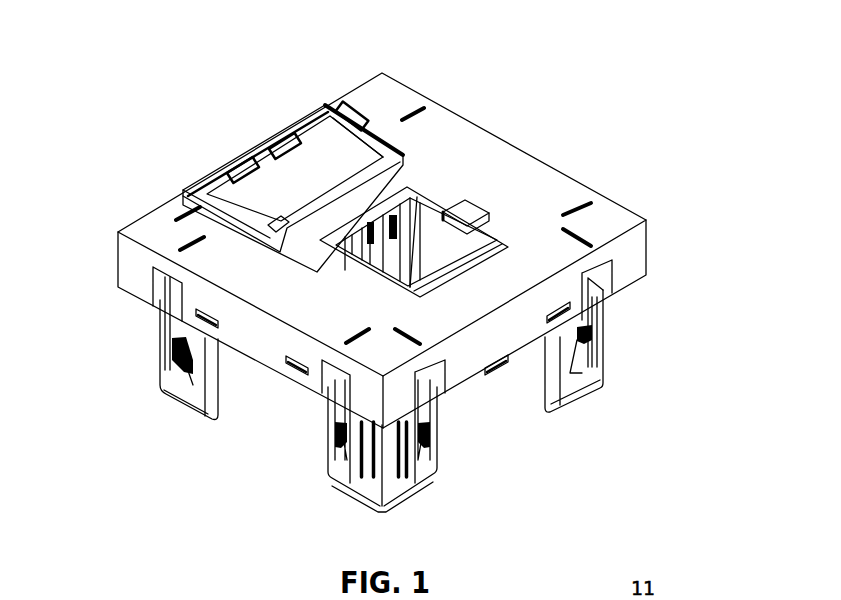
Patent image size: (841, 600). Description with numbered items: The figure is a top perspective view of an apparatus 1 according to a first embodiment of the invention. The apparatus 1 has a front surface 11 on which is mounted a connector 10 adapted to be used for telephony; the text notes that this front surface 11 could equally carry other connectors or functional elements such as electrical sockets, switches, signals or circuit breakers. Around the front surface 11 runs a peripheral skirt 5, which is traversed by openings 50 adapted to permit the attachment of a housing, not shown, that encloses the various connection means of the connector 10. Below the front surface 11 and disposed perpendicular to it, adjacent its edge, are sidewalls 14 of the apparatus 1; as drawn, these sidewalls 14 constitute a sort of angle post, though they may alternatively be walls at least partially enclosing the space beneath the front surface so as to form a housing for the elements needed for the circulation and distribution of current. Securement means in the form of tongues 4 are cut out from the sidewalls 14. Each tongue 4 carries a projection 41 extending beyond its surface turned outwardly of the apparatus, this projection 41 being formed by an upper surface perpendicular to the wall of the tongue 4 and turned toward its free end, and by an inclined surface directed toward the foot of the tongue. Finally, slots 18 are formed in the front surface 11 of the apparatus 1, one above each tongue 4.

The apparatus 1 is at (528, 146).
The tongue 4 is at (177, 323).
The peripheral skirt 5 is at (502, 343).
The connector 10 is at (433, 230).
The front surface 11 is at (432, 122).
The sidewall 14 is at (197, 395).
The slot 18 is at (578, 237).
The projection 41 is at (167, 370).
The opening 50 is at (290, 367).